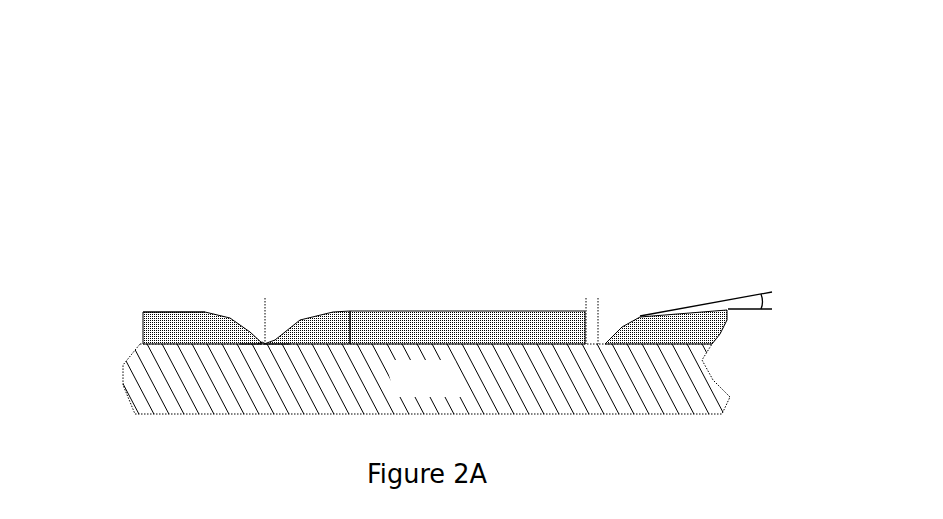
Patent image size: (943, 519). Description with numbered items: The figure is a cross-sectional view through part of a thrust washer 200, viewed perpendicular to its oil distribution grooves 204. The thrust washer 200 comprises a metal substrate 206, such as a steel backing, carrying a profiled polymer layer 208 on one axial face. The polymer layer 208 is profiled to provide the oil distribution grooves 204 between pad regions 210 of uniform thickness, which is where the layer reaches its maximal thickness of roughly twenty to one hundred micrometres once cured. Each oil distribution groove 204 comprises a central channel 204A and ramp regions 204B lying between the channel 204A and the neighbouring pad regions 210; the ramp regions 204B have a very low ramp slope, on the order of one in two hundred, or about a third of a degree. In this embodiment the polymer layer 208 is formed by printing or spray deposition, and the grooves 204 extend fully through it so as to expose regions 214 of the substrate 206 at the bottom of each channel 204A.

The thrust washer 200 is at (583, 103).
The oil distribution grooves 204 is at (444, 230).
The channel 204A is at (262, 340).
The ramp regions 204B is at (202, 312).
The metal substrate 206 is at (178, 388).
The profiled polymer layer 208 is at (176, 332).
The pad regions 210 is at (474, 253).
The exposed regions of the substrate 214 is at (265, 342).